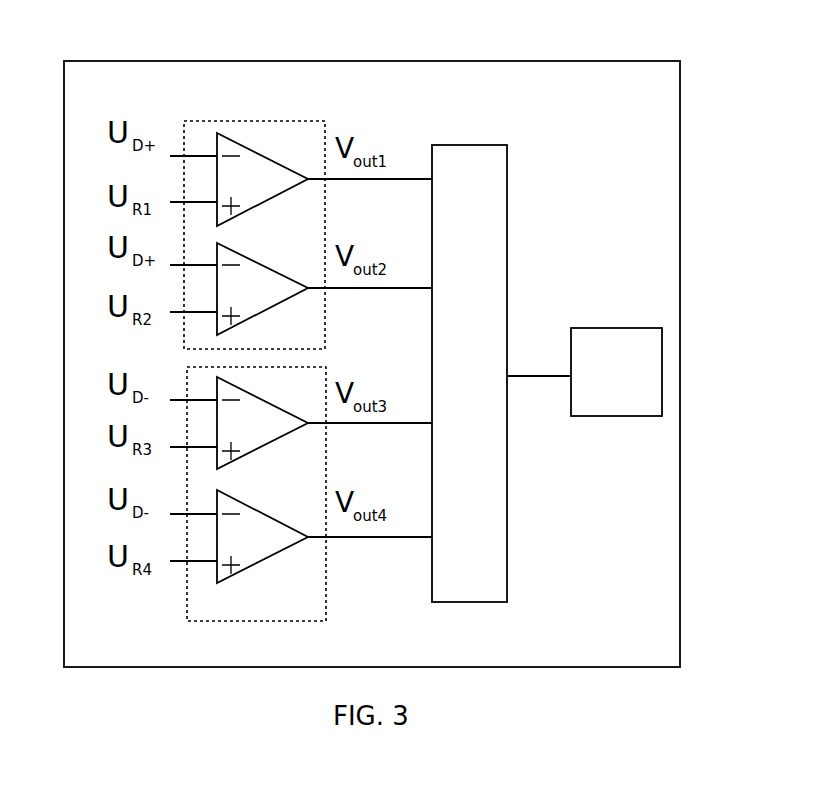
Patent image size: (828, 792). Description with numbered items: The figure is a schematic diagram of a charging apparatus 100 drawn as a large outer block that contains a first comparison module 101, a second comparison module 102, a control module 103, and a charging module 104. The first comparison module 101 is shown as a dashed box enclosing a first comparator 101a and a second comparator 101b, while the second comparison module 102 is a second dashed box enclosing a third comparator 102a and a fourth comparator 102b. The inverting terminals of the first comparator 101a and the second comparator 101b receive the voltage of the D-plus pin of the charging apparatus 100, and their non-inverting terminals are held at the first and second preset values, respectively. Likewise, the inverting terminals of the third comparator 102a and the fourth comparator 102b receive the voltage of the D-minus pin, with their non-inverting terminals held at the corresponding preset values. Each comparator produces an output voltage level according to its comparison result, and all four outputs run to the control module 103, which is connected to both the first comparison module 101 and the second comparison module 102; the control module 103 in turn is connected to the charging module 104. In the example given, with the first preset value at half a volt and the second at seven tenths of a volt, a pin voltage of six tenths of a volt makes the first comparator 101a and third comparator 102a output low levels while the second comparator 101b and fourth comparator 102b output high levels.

The charging apparatus 100 is at (370, 60).
The first comparison module 101 is at (250, 121).
The first comparator 101a is at (301, 179).
The second comparator 101b is at (301, 289).
The second comparison module 102 is at (250, 621).
The third comparator 102a is at (301, 423).
The fourth comparator 102b is at (301, 536).
The control module 103 is at (460, 145).
The charging module 104 is at (605, 328).